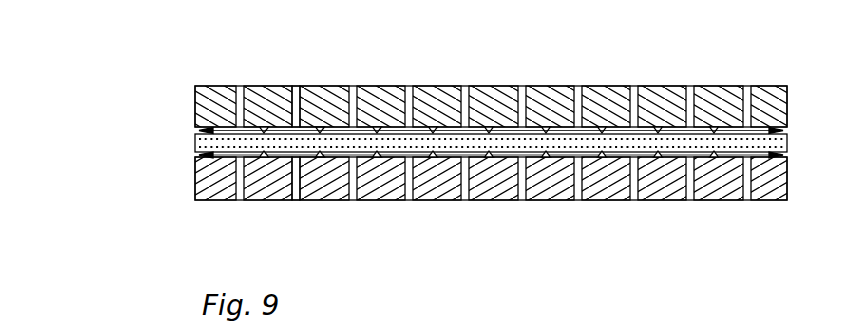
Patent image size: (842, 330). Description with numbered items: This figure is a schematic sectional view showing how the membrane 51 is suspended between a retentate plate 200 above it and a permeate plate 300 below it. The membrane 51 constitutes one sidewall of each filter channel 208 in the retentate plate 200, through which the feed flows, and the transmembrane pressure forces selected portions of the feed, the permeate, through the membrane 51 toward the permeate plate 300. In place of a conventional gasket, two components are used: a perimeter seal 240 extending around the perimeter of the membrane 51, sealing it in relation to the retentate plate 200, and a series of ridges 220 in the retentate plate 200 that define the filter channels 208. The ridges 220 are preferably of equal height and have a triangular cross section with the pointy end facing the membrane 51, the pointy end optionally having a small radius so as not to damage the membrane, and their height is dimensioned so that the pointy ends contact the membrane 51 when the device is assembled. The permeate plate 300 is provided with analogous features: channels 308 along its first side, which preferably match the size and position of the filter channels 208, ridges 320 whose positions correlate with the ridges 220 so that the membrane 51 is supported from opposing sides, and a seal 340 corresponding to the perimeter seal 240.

The retentate plate 200 is at (194, 103).
The filter channel 208 is at (291, 127).
The ridges 220 is at (331, 125).
The perimeter seal 240 is at (199, 131).
The membrane 51 is at (194, 143).
The seal 340 is at (197, 156).
The permeate plate 300 is at (194, 193).
The channels 308 is at (305, 157).
The ridges 320 is at (328, 157).